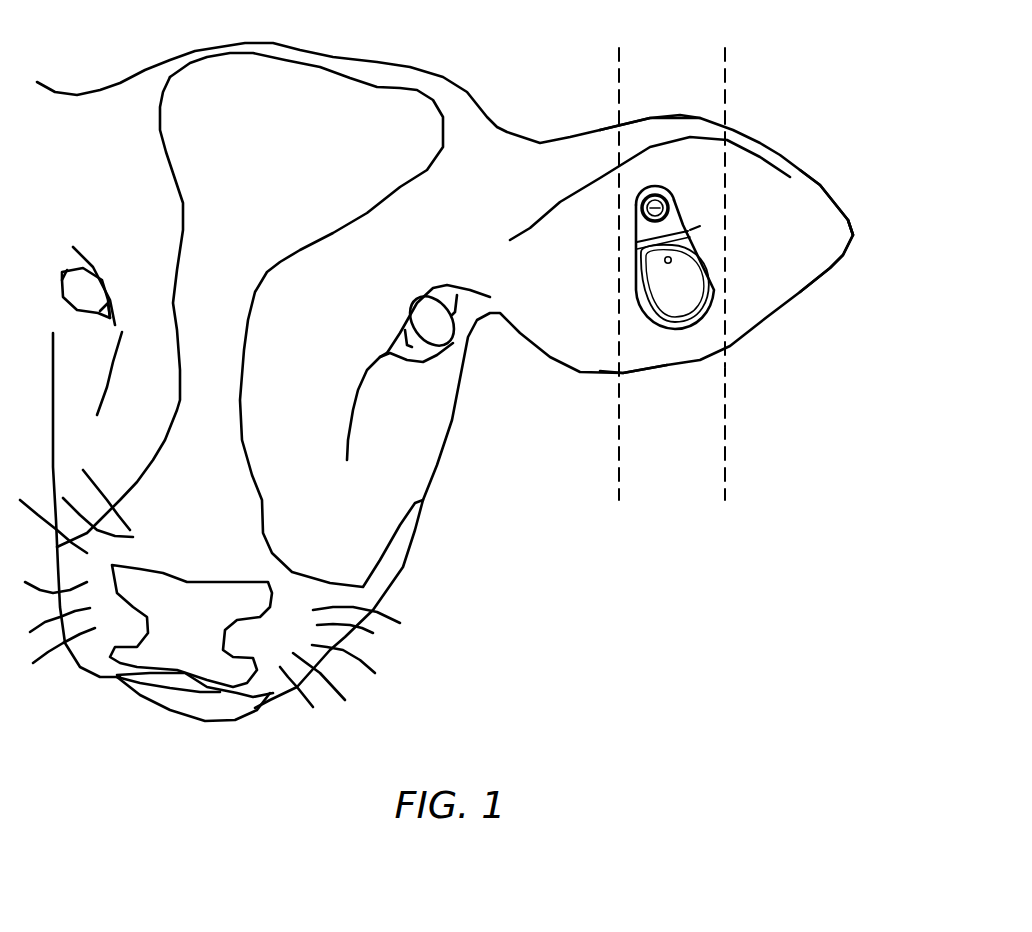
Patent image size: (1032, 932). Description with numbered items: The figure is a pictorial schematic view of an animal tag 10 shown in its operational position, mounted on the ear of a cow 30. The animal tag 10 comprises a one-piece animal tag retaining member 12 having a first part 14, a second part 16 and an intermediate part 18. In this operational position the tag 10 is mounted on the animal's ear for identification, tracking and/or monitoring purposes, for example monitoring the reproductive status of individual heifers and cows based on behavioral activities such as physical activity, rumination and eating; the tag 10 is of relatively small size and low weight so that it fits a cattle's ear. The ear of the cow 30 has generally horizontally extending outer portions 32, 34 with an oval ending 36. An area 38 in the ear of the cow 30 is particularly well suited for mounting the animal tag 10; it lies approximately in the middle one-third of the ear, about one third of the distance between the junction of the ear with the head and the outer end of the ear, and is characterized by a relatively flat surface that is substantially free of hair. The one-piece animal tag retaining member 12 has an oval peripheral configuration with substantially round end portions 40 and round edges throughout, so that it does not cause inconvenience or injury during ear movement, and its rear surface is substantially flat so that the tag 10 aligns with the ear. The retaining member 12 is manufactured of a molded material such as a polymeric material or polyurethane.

The animal tag 10 is at (712, 192).
The one-piece animal tag retaining member 12 is at (640, 208).
The first part 14 is at (683, 217).
The second part 16 is at (690, 230).
The intermediate part 18 is at (716, 287).
The cow 30 is at (565, 330).
The outer portion 32 is at (650, 117).
The outer portion 34 is at (640, 373).
The oval ending 36 is at (812, 180).
The area 38 is at (720, 392).
The round end portions 40 is at (652, 185).